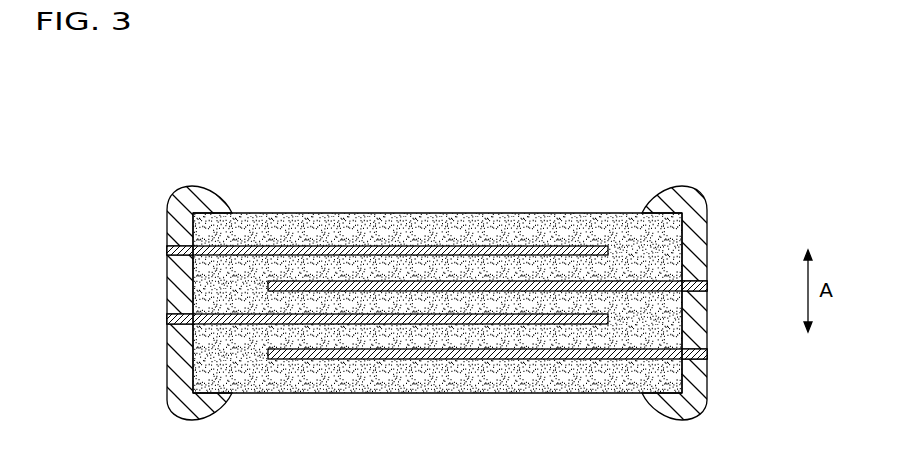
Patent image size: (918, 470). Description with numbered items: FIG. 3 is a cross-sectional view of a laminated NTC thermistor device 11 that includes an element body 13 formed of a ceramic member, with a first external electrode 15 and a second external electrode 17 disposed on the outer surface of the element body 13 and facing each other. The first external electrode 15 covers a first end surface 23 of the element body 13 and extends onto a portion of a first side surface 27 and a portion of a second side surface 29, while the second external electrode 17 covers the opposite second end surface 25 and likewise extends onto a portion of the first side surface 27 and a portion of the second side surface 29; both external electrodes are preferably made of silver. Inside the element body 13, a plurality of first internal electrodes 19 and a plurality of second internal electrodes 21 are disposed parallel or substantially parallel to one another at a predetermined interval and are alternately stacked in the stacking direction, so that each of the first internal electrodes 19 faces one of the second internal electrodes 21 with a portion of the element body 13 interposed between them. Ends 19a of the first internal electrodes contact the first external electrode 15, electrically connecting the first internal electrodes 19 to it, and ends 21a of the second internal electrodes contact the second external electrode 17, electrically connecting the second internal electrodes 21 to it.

The laminated NTC thermistor device 11 is at (728, 105).
The element body 13 is at (572, 232).
The first external electrode 15 is at (170, 200).
The second external electrode 17 is at (705, 205).
The first internal electrodes 19 is at (243, 313).
The ends of the first internal electrodes 19a is at (190, 250).
The second internal electrodes 21 is at (631, 292).
The ends of the second internal electrodes 21a is at (684, 288).
The first end surface 23 is at (170, 371).
The second end surface 25 is at (683, 245).
The first side surface 27 is at (629, 223).
The second side surface 29 is at (625, 394).